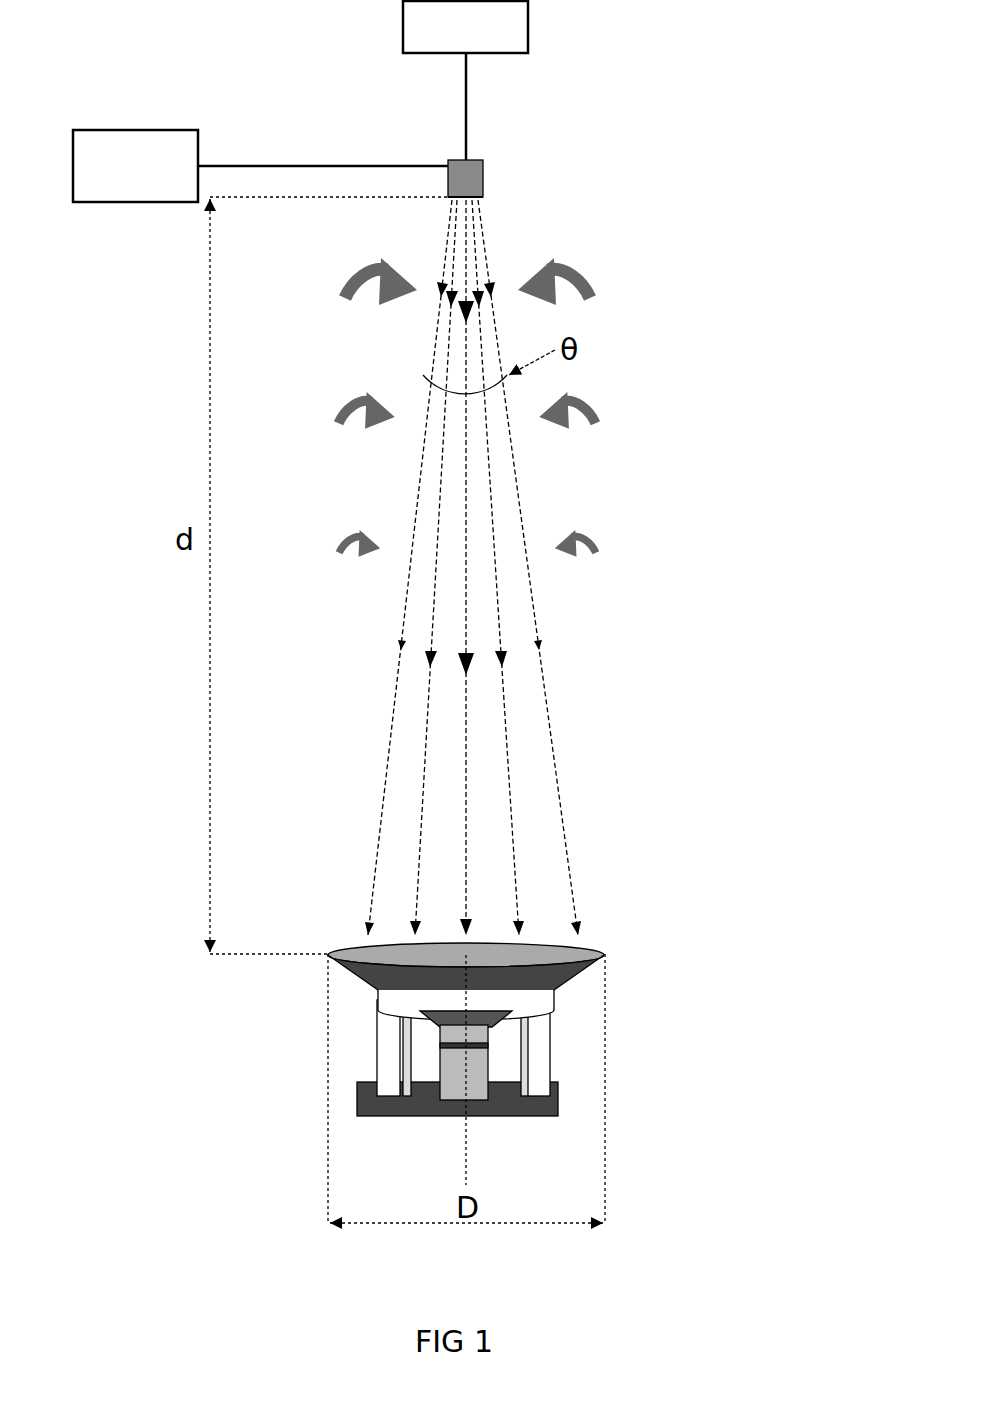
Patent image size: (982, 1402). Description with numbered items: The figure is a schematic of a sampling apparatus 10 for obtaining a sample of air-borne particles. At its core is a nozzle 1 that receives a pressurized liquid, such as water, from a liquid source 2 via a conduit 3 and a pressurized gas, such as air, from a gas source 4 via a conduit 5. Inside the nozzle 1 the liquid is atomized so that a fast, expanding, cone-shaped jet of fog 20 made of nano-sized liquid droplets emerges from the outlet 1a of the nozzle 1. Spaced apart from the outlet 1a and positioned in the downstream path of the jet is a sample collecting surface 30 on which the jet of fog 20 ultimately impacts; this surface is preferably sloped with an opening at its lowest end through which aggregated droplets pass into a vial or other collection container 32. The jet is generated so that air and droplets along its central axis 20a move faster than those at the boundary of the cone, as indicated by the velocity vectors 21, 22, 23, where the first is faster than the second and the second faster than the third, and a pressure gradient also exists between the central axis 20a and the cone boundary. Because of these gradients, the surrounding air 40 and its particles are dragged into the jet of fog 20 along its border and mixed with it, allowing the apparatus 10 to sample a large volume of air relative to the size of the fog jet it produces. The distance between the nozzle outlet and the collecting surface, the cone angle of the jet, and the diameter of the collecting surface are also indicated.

The sampling apparatus 10 is at (228, 35).
The nozzle 1 is at (486, 168).
The outlet of the nozzle 1a is at (452, 199).
The liquid source 2 is at (476, 37).
The conduit 3 is at (470, 115).
The gas source 4 is at (145, 180).
The conduit 5 is at (340, 162).
The jet of fog 20 is at (565, 555).
The central axis of the jet of fog 20a is at (471, 1141).
The velocity vector 21 is at (468, 220).
The velocity vector 22 is at (478, 242).
The velocity vector 23 is at (488, 257).
The sample collecting surface 30 is at (567, 1010).
The collection container 32 is at (428, 1108).
The surrounding air 40 is at (358, 291).